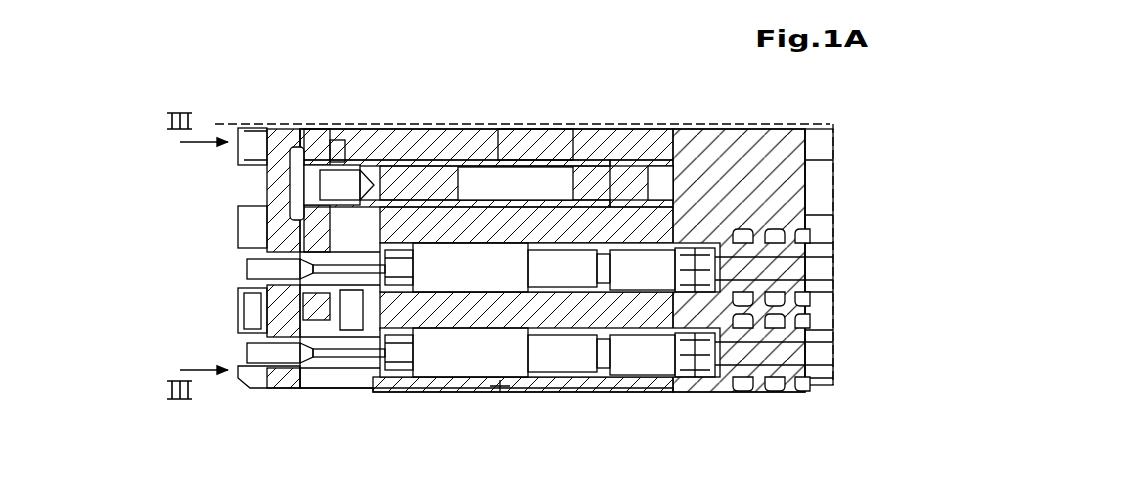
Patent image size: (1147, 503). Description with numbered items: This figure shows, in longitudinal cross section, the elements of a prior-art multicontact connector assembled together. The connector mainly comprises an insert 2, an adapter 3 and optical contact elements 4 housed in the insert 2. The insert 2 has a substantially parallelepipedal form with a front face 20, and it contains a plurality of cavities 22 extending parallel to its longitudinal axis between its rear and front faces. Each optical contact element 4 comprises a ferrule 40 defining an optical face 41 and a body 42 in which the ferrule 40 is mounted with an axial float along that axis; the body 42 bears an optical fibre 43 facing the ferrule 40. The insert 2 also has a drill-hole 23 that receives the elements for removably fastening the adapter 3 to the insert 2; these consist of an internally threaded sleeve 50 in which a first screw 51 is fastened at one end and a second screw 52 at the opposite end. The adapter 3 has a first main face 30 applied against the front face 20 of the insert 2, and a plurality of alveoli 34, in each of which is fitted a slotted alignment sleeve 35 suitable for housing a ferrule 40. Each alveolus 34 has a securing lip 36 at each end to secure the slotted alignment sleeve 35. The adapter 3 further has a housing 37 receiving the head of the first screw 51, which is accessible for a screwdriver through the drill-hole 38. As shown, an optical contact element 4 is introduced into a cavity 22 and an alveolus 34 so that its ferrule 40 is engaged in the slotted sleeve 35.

The insert 2 is at (580, 114).
The adapter 3 is at (278, 120).
The optical contact element 4 is at (500, 394).
The front face 20 is at (343, 129).
The cavity 22 is at (375, 390).
The drill-hole 23 is at (420, 129).
The first main face 30 is at (338, 388).
The alveolus 34 is at (262, 243).
The alignment sleeve 35 is at (258, 268).
The securing lip 36 is at (264, 354).
The housing 37 is at (350, 129).
The drill-hole 38 is at (238, 160).
The ferrule 40 is at (382, 260).
The optical face 41 is at (288, 388).
The body 42 is at (478, 160).
The optical fibre 43 is at (818, 270).
The internally threaded sleeve 50 is at (390, 129).
The first screw 51 is at (320, 129).
The second screw 52 is at (640, 160).